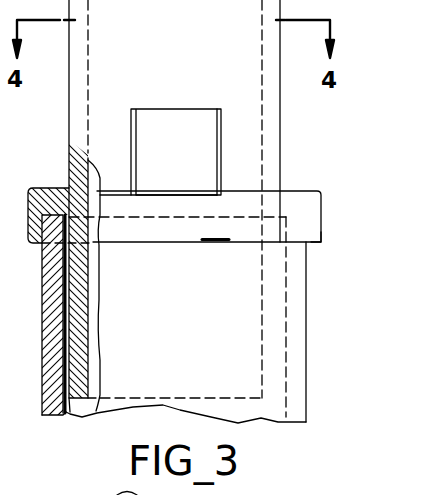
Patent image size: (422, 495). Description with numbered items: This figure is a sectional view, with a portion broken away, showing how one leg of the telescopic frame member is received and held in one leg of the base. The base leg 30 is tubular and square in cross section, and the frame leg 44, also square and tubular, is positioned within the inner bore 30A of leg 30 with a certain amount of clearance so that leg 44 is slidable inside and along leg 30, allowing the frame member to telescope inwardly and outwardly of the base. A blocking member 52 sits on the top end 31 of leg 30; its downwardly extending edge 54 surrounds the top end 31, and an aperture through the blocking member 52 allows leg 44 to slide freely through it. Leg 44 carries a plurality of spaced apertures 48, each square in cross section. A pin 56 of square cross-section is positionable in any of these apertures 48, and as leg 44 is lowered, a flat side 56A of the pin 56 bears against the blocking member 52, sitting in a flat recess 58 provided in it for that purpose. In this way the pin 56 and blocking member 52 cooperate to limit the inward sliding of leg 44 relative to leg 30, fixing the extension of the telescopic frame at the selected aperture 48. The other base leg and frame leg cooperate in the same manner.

The leg 30 is at (307, 295).
The inner bore 30A is at (80, 406).
The top end 31 is at (45, 258).
The leg 44 is at (280, 124).
The apertures 48 is at (221, 170).
The blocking member 52 is at (207, 216).
The downwardly extending edge 54 is at (319, 243).
The pin 56 is at (191, 158).
The flat side 56A is at (163, 195).
The flat recess 58 is at (153, 196).